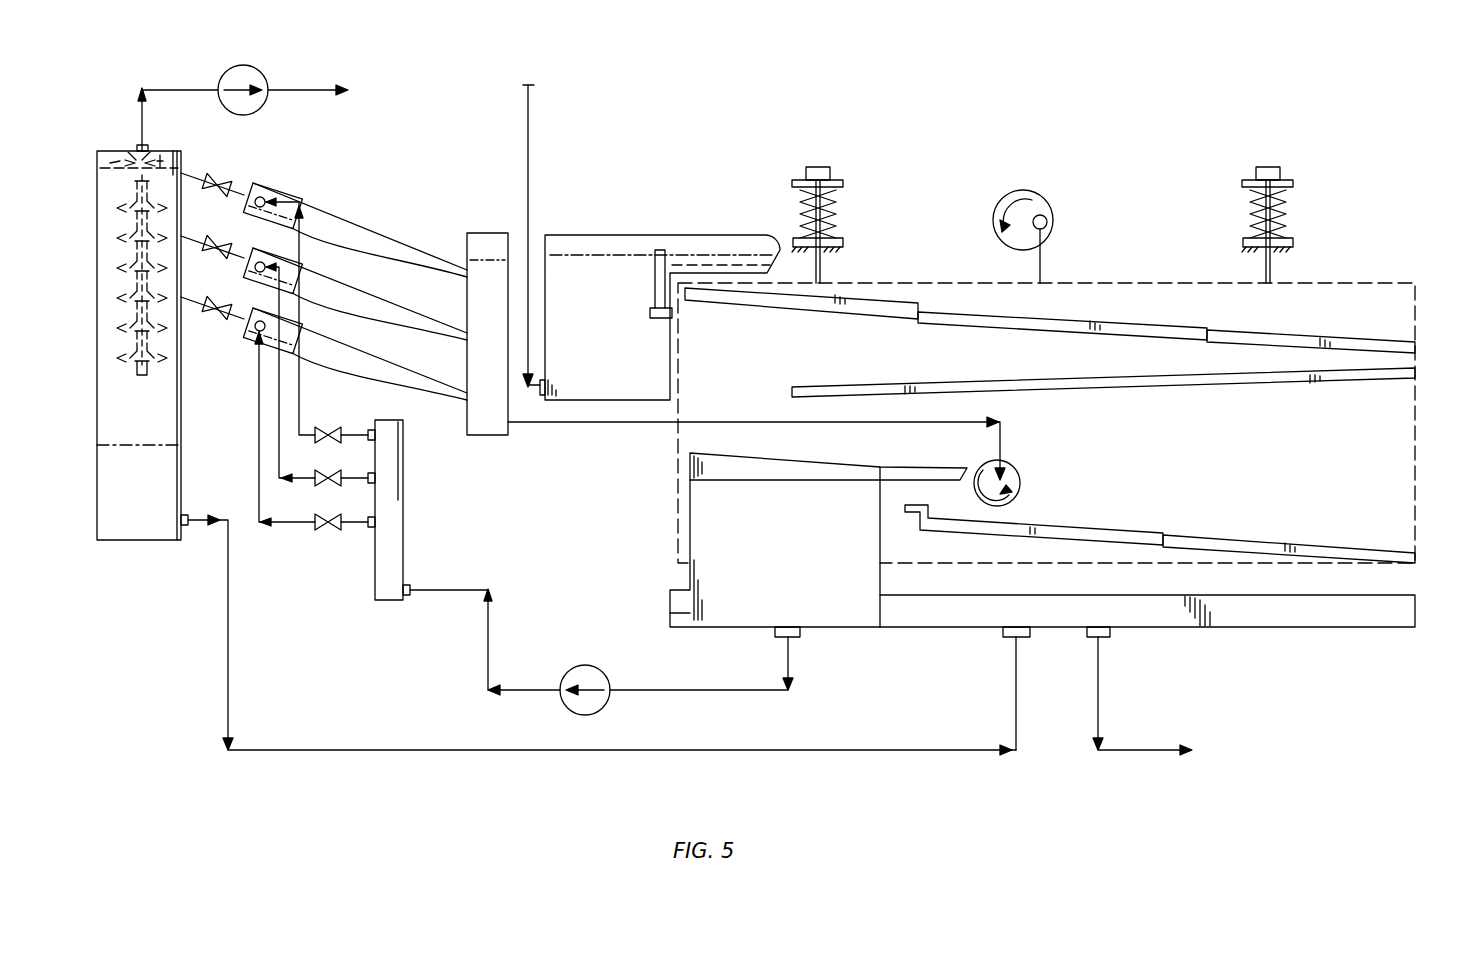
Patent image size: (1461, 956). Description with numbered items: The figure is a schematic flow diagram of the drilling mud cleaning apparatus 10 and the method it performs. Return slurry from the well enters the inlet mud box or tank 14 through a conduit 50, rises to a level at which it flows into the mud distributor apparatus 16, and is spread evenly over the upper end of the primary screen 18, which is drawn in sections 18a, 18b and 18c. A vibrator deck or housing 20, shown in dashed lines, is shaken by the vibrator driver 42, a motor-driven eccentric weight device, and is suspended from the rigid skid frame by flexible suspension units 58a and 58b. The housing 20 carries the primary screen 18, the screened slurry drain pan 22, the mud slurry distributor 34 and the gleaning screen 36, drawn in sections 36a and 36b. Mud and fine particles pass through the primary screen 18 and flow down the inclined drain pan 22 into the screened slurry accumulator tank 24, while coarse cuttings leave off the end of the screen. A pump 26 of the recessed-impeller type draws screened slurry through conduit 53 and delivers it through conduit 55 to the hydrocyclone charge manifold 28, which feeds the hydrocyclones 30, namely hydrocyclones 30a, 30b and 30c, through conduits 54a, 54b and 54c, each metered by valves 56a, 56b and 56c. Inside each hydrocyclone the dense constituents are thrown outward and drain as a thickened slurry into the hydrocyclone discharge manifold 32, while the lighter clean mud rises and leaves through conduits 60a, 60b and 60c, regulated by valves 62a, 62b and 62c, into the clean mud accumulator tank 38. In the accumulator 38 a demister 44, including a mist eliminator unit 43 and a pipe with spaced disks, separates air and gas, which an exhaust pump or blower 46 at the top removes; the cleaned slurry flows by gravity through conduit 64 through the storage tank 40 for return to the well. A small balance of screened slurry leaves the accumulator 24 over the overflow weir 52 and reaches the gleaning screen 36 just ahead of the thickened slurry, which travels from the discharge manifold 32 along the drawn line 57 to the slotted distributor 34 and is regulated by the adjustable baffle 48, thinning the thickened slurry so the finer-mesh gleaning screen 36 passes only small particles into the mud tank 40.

The apparatus 10 is at (1018, 124).
The inlet mud box or tank 14 is at (545, 250).
The mud distributor apparatus 16 is at (716, 248).
The primary screen 18 is at (1050, 304).
The first screen section 18a is at (792, 320).
The second screen section 18b is at (1012, 334).
The third screen section 18c is at (1290, 333).
The vibrator deck or housing 20 is at (893, 278).
The screened slurry drain pan 22 is at (1100, 393).
The screened slurry accumulator tank 24 is at (688, 572).
The pump 26 is at (605, 673).
The hydrocyclone charge manifold 28 is at (405, 505).
The hydrocyclones 30 is at (357, 266).
The hydrocyclone 30a is at (377, 232).
The hydrocyclone 30b is at (377, 295).
The hydrocyclone 30c is at (377, 357).
The hydrocyclone discharge manifold 32 is at (467, 425).
The mud slurry distributor 34 is at (1021, 464).
The gleaning screen 36 is at (1160, 524).
The lower screen first section 36a is at (1103, 525).
The lower screen second section 36b is at (1270, 540).
The clean mud accumulator tank 38 is at (182, 492).
The storage tank 40 is at (975, 612).
The vibrator driver 42 is at (1047, 218).
The mist eliminator unit 43 is at (128, 160).
The demister 44 is at (97, 255).
The exhaust pump or blower 46 is at (263, 72).
The adjustable baffle 48 is at (1020, 490).
The conduit 50 is at (528, 120).
The overflow weir 52 is at (940, 467).
The conduit 53 is at (697, 690).
The conduit 54a is at (297, 377).
The conduit 54b is at (279, 401).
The conduit 54c is at (259, 430).
The conduit 55 is at (490, 642).
The valve 56a is at (320, 425).
The valve 56b is at (320, 468).
The valve 56c is at (320, 512).
The drive line 57 is at (700, 420).
The flexible suspension unit 58a is at (818, 167).
The flexible suspension unit 58b is at (1268, 167).
The conduit 60a is at (243, 192).
The conduit 60b is at (243, 255).
The conduit 60c is at (243, 316).
The valve 62a is at (223, 183).
The valve 62b is at (223, 247).
The valve 62c is at (223, 308).
The conduit 64 is at (680, 752).